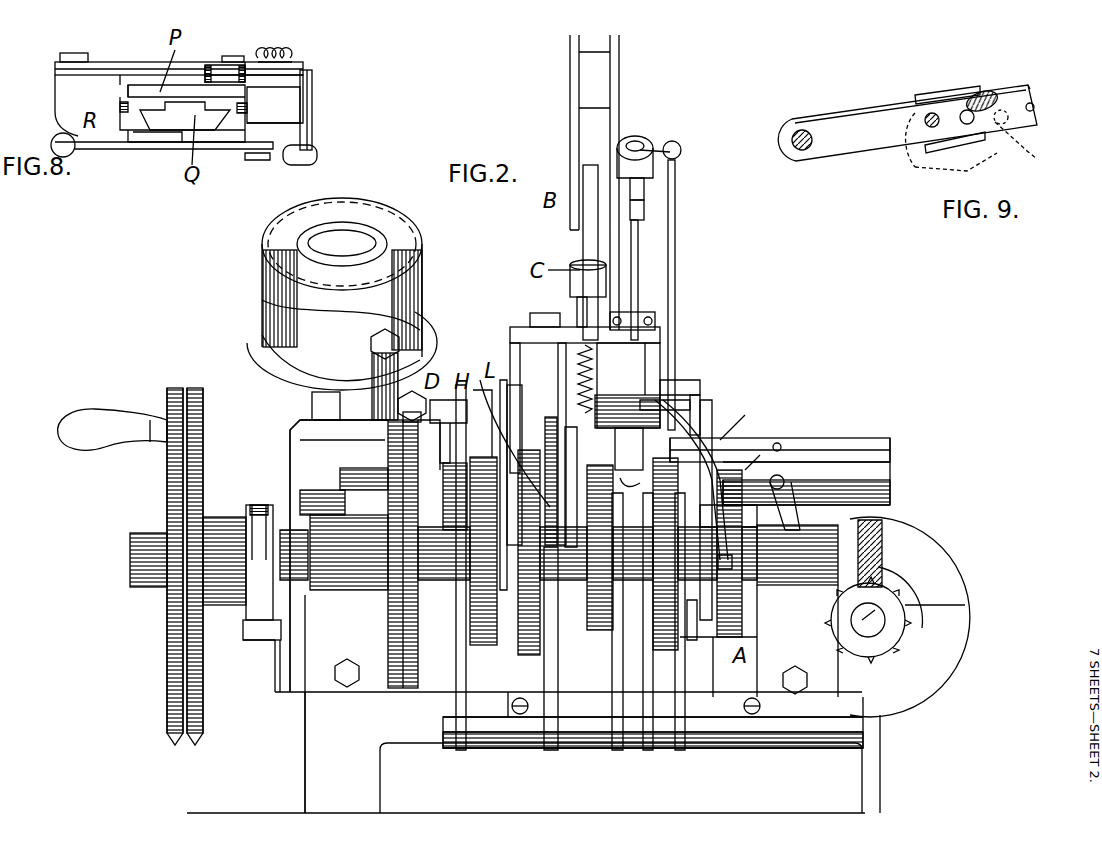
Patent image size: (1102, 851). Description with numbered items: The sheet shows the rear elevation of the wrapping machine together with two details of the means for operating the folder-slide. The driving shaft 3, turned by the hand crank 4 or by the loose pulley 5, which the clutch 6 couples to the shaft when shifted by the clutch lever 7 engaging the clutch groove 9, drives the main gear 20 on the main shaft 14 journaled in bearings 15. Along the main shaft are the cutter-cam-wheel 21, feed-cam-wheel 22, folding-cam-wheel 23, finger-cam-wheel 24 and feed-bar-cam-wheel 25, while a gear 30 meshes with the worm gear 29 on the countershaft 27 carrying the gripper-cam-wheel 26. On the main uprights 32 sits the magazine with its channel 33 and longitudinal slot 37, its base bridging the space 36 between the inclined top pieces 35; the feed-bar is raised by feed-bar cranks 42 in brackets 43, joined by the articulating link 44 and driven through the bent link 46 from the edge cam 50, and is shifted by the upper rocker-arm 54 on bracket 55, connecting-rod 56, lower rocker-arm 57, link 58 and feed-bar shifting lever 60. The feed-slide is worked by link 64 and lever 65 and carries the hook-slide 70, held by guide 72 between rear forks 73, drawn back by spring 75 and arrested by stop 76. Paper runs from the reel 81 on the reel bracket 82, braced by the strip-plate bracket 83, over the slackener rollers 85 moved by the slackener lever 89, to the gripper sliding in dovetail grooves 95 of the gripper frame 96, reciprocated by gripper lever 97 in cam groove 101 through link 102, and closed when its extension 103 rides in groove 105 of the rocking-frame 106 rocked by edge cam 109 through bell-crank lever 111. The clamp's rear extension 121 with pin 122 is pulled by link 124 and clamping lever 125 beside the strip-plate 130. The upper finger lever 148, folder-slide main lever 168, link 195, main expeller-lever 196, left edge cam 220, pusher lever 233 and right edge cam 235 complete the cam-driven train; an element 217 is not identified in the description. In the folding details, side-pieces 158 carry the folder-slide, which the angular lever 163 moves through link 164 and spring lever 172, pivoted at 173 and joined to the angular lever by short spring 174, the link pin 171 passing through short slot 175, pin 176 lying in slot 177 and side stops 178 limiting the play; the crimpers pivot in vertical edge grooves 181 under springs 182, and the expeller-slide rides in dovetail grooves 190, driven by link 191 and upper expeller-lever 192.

In FIG. 2, the driving shaft 3 is at (283, 585).
In FIG. 2, the crank 4 is at (105, 428).
In FIG. 2, the loose pulley 5 is at (170, 520).
In FIG. 2, the clutch 6 is at (252, 530).
In FIG. 2, the clutch lever 7 is at (245, 625).
In FIG. 2, the clutch groove 9 is at (260, 508).
In FIG. 2, the main shaft 14 is at (740, 600).
In FIG. 2, the bearings 15 is at (574, 552).
In FIG. 2, the main gear 20 is at (400, 590).
In FIG. 2, the cutter-cam-wheel 21 is at (486, 645).
In FIG. 2, the feed-cam-wheel 22 is at (532, 655).
In FIG. 2, the folding-cam-wheel 23 is at (599, 547).
In FIG. 2, the finger-cam-wheel 24 is at (670, 660).
In FIG. 2, the feed-bar-cam-wheel 25 is at (718, 477).
In FIG. 2, the gripper-cam-wheel 26 is at (938, 633).
In FIG. 2, the countershaft 27 is at (880, 625).
In FIG. 2, the worm gear 29 is at (905, 620).
In FIG. 2, the gear 30 is at (885, 525).
In FIG. 2, the main uprights 32 is at (700, 400).
In FIG. 2, the channel 33 is at (592, 135).
In FIG. 2, the inclined top pieces 35 is at (690, 382).
In FIG. 2, the space 36 is at (545, 327).
In FIG. 2, the longitudinal slot 37 is at (583, 225).
In FIG. 2, the feed-bar cranks 42 is at (645, 185).
In FIG. 2, the brackets 43 is at (645, 208).
In FIG. 2, the articulating link 44 is at (676, 244).
In FIG. 2, the bent link 46 is at (703, 467).
In FIG. 2, the edge cam 50 is at (715, 445).
In FIG. 2, the upper rocker-arm 54 is at (676, 156).
In FIG. 2, the bracket 55 is at (652, 145).
In FIG. 2, the connecting-rod 56 is at (640, 270).
In FIG. 2, the lower rocker-arm 57 is at (690, 400).
In FIG. 2, the link 58 is at (783, 470).
In FIG. 2, the feed-bar shifting lever 60 is at (855, 445).
In FIG. 2, the link 64 is at (560, 380).
In FIG. 2, the lever 65 is at (572, 440).
In FIG. 2, the hook-slide 70 is at (540, 340).
In FIG. 2, the guide 72 is at (650, 305).
In FIG. 2, the rear forks 73 is at (577, 293).
In FIG. 2, the spring 75 is at (662, 350).
In FIG. 2, the stop 76 is at (655, 318).
In FIG. 2, the reel 81 is at (422, 250).
In FIG. 2, the reel bracket 82 is at (325, 400).
In FIG. 2, the strip-plate bracket 83 is at (290, 500).
In FIG. 2, the anti-friction rollers 85 is at (425, 420).
In FIG. 2, the slackener lever 89 is at (385, 478).
In FIG. 2, the dovetail grooves 95 is at (760, 500).
In FIG. 2, the gripper frame 96 is at (890, 482).
In FIG. 2, the gripper lever 97 is at (786, 492).
In FIG. 2, the cam groove 101 is at (895, 585).
In FIG. 2, the link 102 is at (783, 457).
In FIG. 2, the integral extension 103 is at (630, 470).
In FIG. 2, the groove 105 is at (890, 448).
In FIG. 2, the rocking-frame 106 is at (727, 483).
In FIG. 2, the edge cam 109 is at (935, 538).
In FIG. 2, the bell-crank lever 111 is at (745, 530).
In FIG. 2, the rear extension 121 is at (390, 450).
In FIG. 2, the pin 122 is at (450, 490).
In FIG. 2, the link 124 is at (332, 500).
In FIG. 2, the clamping lever 125 is at (443, 700).
In FIG. 2, the strip-plate 130 is at (298, 425).
In FIG. 2, the upper finger lever 148 is at (690, 700).
In FIG. 2, the folder-slide main lever 168 is at (572, 700).
In FIG. 2, the link 195 is at (648, 610).
In FIG. 2, the main expeller-lever 196 is at (618, 700).
In FIG. 2, the link 217 is at (730, 400).
In FIG. 2, the left edge cam 220 is at (660, 680).
In FIG. 2, the pusher lever 233 is at (480, 380).
In FIG. 2, the right edge cam 235 is at (585, 665).
In FIG. 8, the side-pieces 158 is at (270, 118).
In FIG. 8, the angular lever 163 is at (312, 73).
In FIG. 9, the angular lever 163 is at (858, 112).
In FIG. 8, the link 164 is at (290, 98).
In FIG. 9, the link 164 is at (967, 171).
In FIG. 8, the spring lever 172 is at (112, 75).
In FIG. 8, the pivot 173 is at (74, 56).
In FIG. 9, the pivot 173 is at (804, 130).
In FIG. 8, the short spring 174 is at (290, 57).
In FIG. 9, the short spring 174 is at (1005, 92).
In FIG. 9, the short slot 175 is at (928, 124).
In FIG. 8, the pin 176 is at (230, 56).
In FIG. 9, the pin 176 is at (968, 124).
In FIG. 9, the slot 177 is at (1036, 158).
In FIG. 8, the side stops 178 is at (248, 72).
In FIG. 9, the side stops 178 is at (950, 152).
In FIG. 8, the vertical edge grooves 181 is at (242, 113).
In FIG. 8, the springs 182 is at (315, 148).
In FIG. 8, the dovetail grooves 190 is at (238, 130).
In FIG. 8, the link 191 is at (150, 135).
In FIG. 8, the upper expeller-lever 192 is at (98, 143).
In FIG. 9, the link pin 171 is at (928, 122).